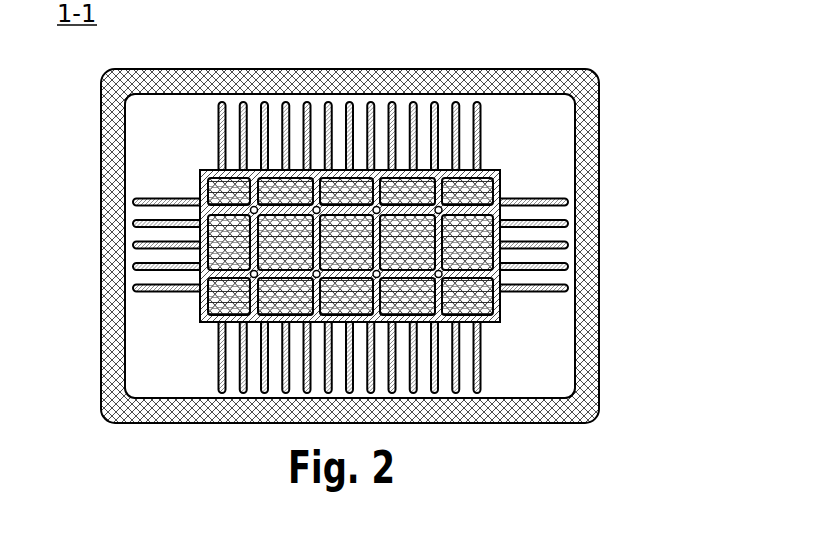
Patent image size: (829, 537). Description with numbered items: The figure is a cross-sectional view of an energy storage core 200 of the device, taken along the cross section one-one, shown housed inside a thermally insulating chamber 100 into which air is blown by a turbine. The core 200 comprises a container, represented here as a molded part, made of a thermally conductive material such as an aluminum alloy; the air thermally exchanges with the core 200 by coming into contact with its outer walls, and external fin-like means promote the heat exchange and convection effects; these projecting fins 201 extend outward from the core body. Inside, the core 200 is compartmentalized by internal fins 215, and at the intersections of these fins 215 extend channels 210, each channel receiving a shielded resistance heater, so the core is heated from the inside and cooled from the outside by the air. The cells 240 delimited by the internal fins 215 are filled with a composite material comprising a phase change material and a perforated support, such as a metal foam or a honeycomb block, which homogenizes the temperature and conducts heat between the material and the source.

The thermally insulating chamber 100 is at (599, 90).
The energy storage core 200 is at (520, 149).
The fins 201 is at (482, 358).
The channels 210 is at (477, 275).
The fins 215 is at (460, 200).
The cells 240 is at (230, 295).